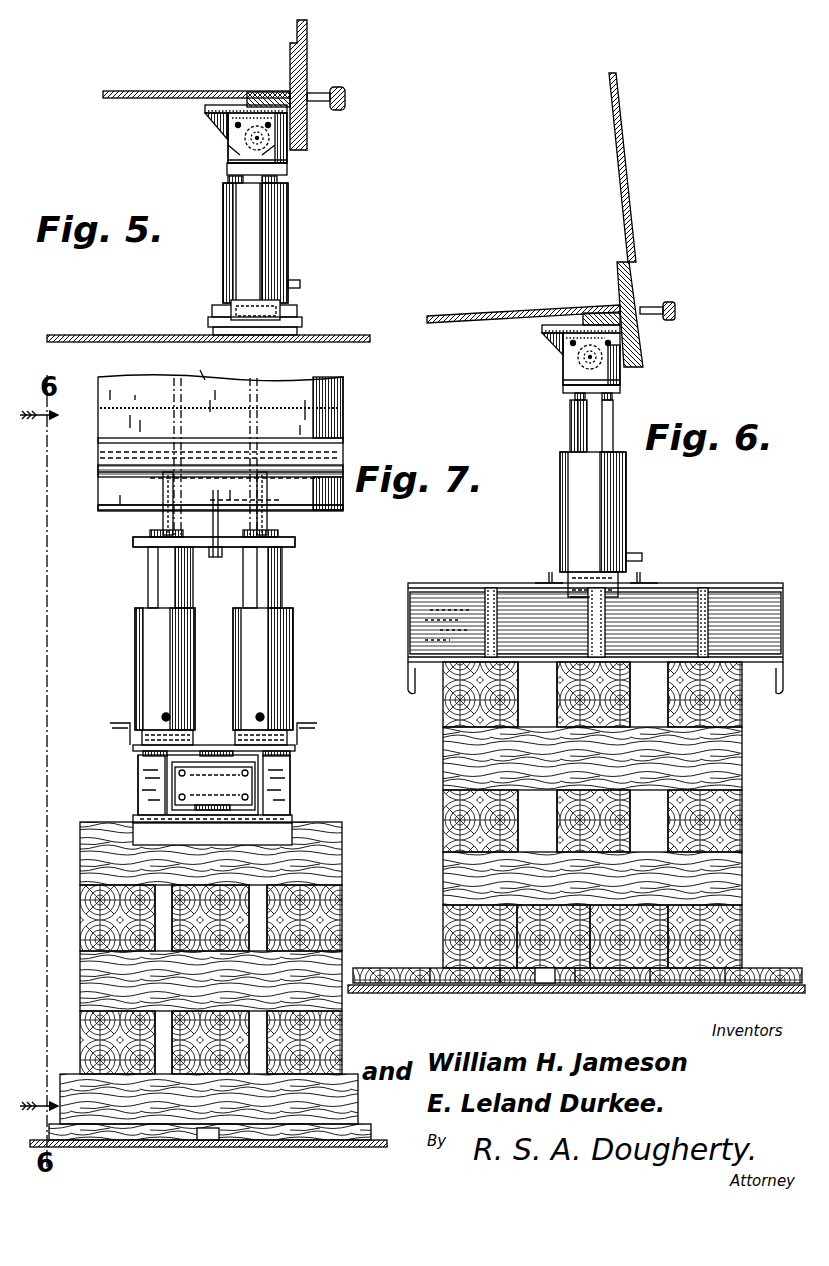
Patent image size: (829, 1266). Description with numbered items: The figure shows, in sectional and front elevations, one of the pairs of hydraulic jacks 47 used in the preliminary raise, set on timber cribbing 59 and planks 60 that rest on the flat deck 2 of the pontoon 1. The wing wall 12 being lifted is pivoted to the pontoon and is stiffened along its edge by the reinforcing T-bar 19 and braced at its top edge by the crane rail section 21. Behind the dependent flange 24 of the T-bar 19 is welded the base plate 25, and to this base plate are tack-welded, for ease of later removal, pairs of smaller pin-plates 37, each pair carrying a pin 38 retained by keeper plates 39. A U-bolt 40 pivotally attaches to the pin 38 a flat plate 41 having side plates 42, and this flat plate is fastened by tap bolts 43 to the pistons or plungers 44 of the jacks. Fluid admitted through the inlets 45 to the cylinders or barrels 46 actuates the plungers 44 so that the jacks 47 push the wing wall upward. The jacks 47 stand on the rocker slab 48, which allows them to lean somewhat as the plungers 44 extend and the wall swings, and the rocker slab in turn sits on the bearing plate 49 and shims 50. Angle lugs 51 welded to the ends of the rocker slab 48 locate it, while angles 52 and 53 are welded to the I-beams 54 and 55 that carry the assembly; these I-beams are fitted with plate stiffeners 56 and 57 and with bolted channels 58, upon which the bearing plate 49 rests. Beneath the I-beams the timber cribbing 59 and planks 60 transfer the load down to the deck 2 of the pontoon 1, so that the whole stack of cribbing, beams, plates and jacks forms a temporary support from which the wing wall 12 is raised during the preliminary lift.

In FIG. 6, the pontoon 1 is at (445, 995).
In FIG. 7, the pontoon 1 is at (350, 1148).
In FIG. 6, the flat deck 2 is at (700, 990).
In FIG. 7, the flat deck 2 is at (140, 1140).
In FIG. 5, the side wing wall 12 is at (154, 91).
In FIG. 6, the side wing wall 12 is at (630, 175).
In FIG. 7, the side wing wall 12 is at (345, 402).
In FIG. 5, the reinforcing T-bar 19 is at (308, 72).
In FIG. 6, the reinforcing T-bar 19 is at (640, 292).
In FIG. 7, the reinforcing T-bar 19 is at (100, 440).
In FIG. 5, the crane rail section 21 is at (346, 90).
In FIG. 6, the crane rail section 21 is at (676, 310).
In FIG. 7, the crane rail section 21 is at (330, 455).
In FIG. 5, the dependent flange 24 is at (300, 122).
In FIG. 6, the dependent flange 24 is at (637, 347).
In FIG. 7, the dependent flange 24 is at (98, 512).
In FIG. 5, the base plate 25 is at (208, 108).
In FIG. 6, the base plate 25 is at (545, 328).
In FIG. 5, the pin-plates 37 is at (222, 128).
In FIG. 6, the pin-plates 37 is at (560, 353).
In FIG. 7, the pin-plates 37 is at (245, 445).
In FIG. 5, the pin 38 is at (286, 164).
In FIG. 6, the pin 38 is at (563, 380).
In FIG. 7, the pin 38 is at (145, 548).
In FIG. 5, the keeper plates 39 is at (229, 148).
In FIG. 6, the keeper plates 39 is at (575, 370).
In FIG. 7, the keeper plates 39 is at (163, 520).
In FIG. 5, the U-bolt 40 is at (235, 186).
In FIG. 6, the U-bolt 40 is at (613, 398).
In FIG. 7, the U-bolt 40 is at (218, 550).
In FIG. 5, the flat plate 41 is at (230, 173).
In FIG. 6, the flat plate 41 is at (622, 388).
In FIG. 7, the flat plate 41 is at (290, 548).
In FIG. 5, the side plates 42 is at (287, 158).
In FIG. 6, the side plates 42 is at (580, 400).
In FIG. 7, the side plates 42 is at (260, 500).
In FIG. 5, the tap bolts 43 is at (253, 184).
In FIG. 6, the tap bolts 43 is at (605, 400).
In FIG. 7, the tap bolts 43 is at (160, 545).
In FIG. 5, the pistons or plungers 44 is at (263, 182).
In FIG. 6, the pistons or plungers 44 is at (580, 460).
In FIG. 7, the pistons or plungers 44 is at (222, 586).
In FIG. 5, the inlets 45 is at (302, 284).
In FIG. 6, the inlets 45 is at (645, 555).
In FIG. 7, the inlets 45 is at (168, 717).
In FIG. 5, the cylinders or barrels 46 is at (238, 267).
In FIG. 6, the cylinders or barrels 46 is at (568, 510).
In FIG. 7, the cylinders or barrels 46 is at (143, 640).
In FIG. 5, the hydraulic jacks 47 is at (280, 252).
In FIG. 6, the hydraulic jacks 47 is at (620, 506).
In FIG. 7, the hydraulic jacks 47 is at (225, 657).
In FIG. 5, the rocker slab 48 is at (300, 310).
In FIG. 6, the rocker slab 48 is at (565, 580).
In FIG. 7, the rocker slab 48 is at (212, 785).
In FIG. 5, the bearing plate 49 is at (210, 322).
In FIG. 5, the shims 50 is at (273, 338).
In FIG. 5, the angle lugs 51 is at (257, 313).
In FIG. 6, the angle lugs 51 is at (585, 600).
In FIG. 7, the angle lugs 51 is at (125, 735).
In FIG. 6, the angle 52 is at (548, 576).
In FIG. 7, the angle 52 is at (150, 742).
In FIG. 6, the angle 53 is at (410, 690).
In FIG. 7, the angle 53 is at (292, 838).
In FIG. 6, the I-beam 54 is at (408, 640).
In FIG. 7, the I-beam 54 is at (140, 788).
In FIG. 7, the I-beam 55 is at (290, 790).
In FIG. 6, the plate stiffener 56 is at (487, 620).
In FIG. 7, the plate stiffener 56 is at (138, 810).
In FIG. 7, the plate stiffener 57 is at (237, 823).
In FIG. 6, the bolted channels 58 is at (485, 605).
In FIG. 7, the bolted channels 58 is at (195, 818).
In FIG. 6, the timber cribbing 59 is at (445, 710).
In FIG. 7, the timber cribbing 59 is at (345, 885).
In FIG. 6, the planks 60 is at (552, 985).
In FIG. 7, the planks 60 is at (210, 1141).